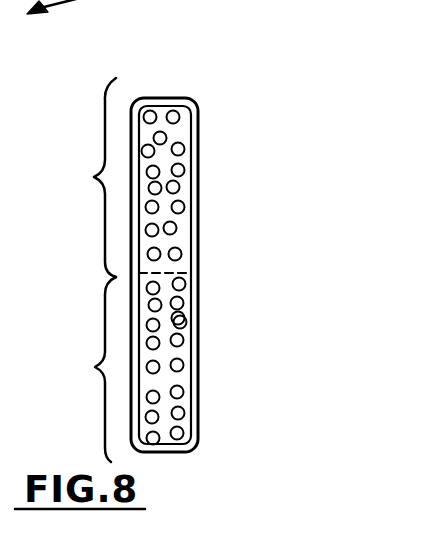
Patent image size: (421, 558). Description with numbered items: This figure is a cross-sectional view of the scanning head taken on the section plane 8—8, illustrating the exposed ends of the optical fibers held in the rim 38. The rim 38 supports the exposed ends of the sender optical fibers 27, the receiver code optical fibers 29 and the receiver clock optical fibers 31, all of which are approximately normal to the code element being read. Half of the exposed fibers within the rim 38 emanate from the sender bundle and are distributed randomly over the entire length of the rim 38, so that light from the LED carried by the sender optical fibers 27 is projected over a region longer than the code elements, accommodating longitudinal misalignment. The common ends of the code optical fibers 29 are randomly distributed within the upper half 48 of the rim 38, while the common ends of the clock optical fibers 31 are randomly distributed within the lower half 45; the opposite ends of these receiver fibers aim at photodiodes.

The section plane 8 is at (40, 16).
The rim 38 is at (196, 103).
The upper half of the rim 48 is at (121, 177).
The lower half of the rim 45 is at (119, 369).
The receiver code optical fibers 29 is at (147, 172).
The sender optical fibers 27 is at (183, 194).
The receiver clock optical fibers 31 is at (158, 394).